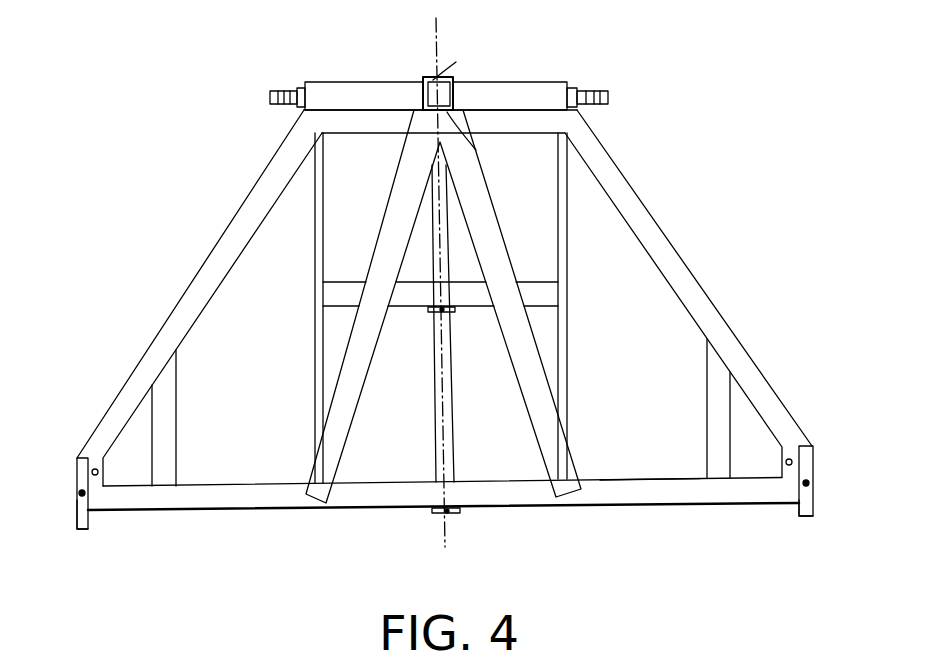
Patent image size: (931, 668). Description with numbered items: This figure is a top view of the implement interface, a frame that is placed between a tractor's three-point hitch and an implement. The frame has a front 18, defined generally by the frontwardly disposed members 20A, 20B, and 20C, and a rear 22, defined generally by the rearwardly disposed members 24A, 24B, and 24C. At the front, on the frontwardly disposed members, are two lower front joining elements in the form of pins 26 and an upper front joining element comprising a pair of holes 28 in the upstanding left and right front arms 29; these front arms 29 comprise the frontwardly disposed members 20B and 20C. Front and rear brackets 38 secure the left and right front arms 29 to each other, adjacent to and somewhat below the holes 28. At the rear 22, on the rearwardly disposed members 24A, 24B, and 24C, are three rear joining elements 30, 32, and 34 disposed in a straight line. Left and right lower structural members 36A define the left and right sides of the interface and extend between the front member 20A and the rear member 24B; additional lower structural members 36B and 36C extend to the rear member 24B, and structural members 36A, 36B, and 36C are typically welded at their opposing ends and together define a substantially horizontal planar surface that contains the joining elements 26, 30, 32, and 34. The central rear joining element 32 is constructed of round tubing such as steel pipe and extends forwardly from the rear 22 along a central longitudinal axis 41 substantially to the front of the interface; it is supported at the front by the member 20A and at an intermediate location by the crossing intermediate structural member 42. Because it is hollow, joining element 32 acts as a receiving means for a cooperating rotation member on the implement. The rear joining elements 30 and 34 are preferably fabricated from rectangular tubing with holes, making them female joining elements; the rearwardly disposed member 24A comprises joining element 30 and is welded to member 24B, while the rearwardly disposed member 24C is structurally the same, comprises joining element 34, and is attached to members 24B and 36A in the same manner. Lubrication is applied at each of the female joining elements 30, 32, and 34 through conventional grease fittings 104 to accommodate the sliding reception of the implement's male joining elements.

The front 18 is at (447, 91).
The frontwardly disposed member 20A is at (348, 134).
The frontwardly disposed member 20B is at (352, 82).
The frontwardly disposed member 20C is at (482, 82).
The rear 22 is at (522, 510).
The rearwardly disposed member 24A is at (76, 515).
The rearwardly disposed member 24B is at (643, 490).
The rearwardly disposed member 24C is at (799, 510).
The pin 26 is at (282, 90).
The hole 28 is at (424, 80).
The front arm 29 is at (454, 98).
The rear joining element 30 is at (84, 527).
The rear joining element 32 is at (433, 516).
The rear joining element 34 is at (807, 518).
The lower structural member 36A is at (175, 308).
The lower structural member 36B is at (178, 423).
The lower structural member 36C is at (315, 333).
The bracket 38 is at (469, 104).
The central longitudinal axis 41 is at (448, 435).
The crossing intermediate structural member 42 is at (533, 281).
The grease fitting 104 is at (80, 493).